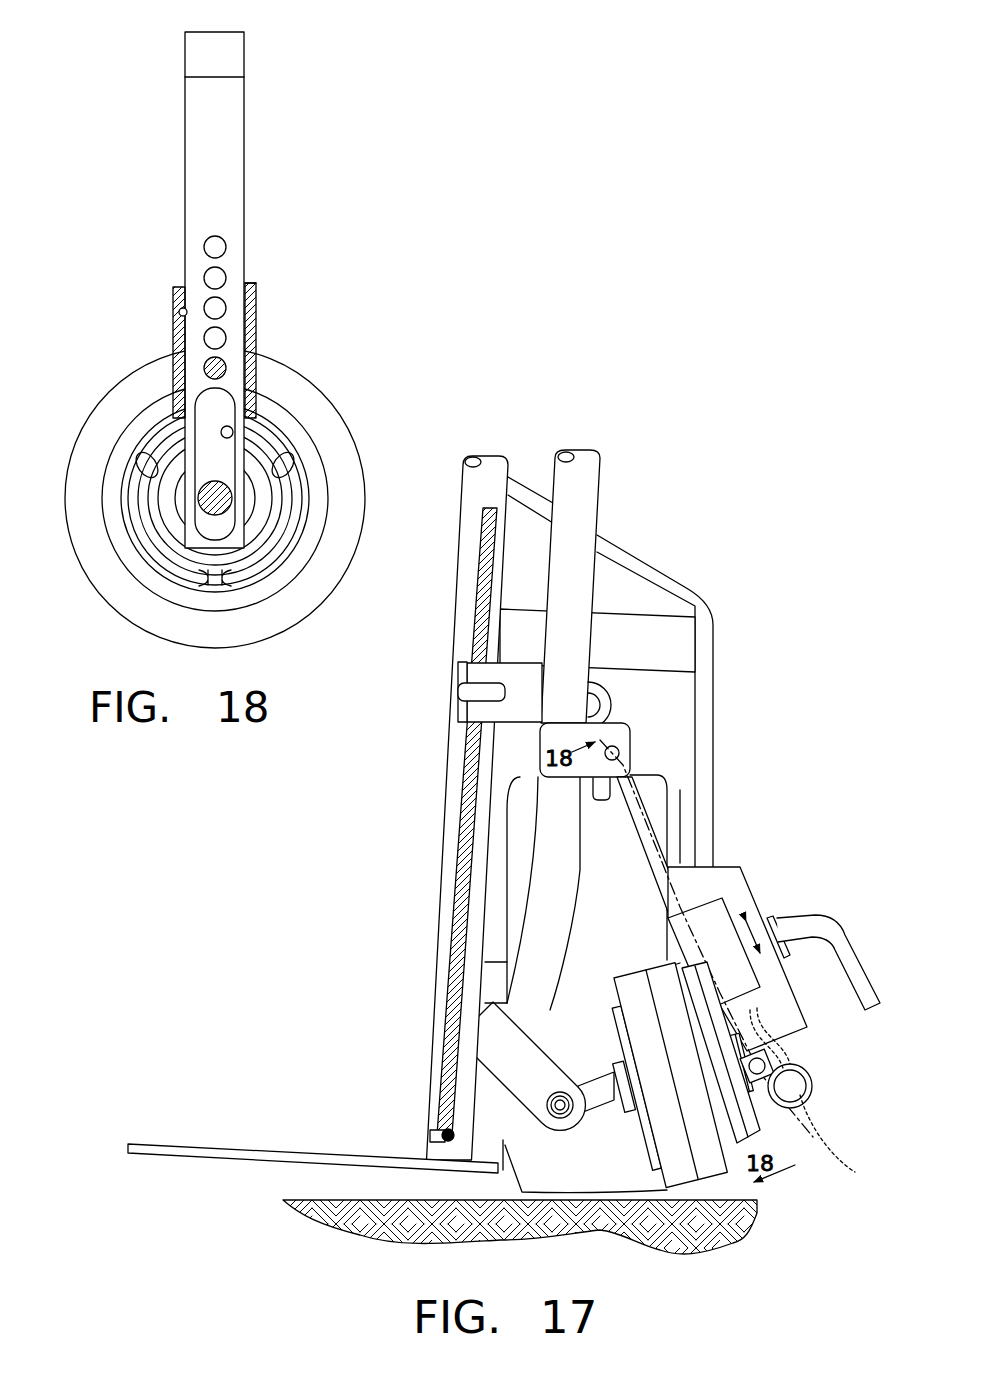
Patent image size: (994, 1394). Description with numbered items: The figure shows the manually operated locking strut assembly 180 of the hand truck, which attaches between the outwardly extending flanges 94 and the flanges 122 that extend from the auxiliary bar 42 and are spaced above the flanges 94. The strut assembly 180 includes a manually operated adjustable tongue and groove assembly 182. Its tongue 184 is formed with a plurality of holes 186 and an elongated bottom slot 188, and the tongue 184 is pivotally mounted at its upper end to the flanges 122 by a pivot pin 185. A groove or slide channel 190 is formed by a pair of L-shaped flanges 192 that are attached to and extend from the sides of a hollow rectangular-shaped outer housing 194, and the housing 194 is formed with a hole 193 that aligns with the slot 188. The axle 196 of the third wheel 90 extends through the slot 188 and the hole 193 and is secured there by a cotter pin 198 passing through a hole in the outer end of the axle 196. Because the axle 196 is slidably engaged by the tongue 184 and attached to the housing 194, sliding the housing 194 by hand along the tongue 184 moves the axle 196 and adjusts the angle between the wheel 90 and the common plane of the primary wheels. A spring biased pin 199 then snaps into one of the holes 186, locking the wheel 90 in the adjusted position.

In FIG. 17, the auxiliary bar 42 is at (587, 505).
In FIG. 18, the third wheel 90 is at (108, 604).
In FIG. 17, the third wheel 90 is at (720, 1170).
In FIG. 17, the outwardly extending flanges 94 is at (515, 1060).
In FIG. 17, the flanges 122 is at (620, 733).
In FIG. 17, the locking strut assembly 180 is at (747, 938).
In FIG. 18, the tongue and groove assembly 182 is at (258, 277).
In FIG. 17, the tongue and groove assembly 182 is at (667, 909).
In FIG. 18, the tongue 184 is at (214, 122).
In FIG. 17, the tongue 184 is at (650, 840).
In FIG. 17, the pivot pin 185 is at (620, 752).
In FIG. 18, the holes 186 is at (221, 244).
In FIG. 18, the elongated bottom slot 188 is at (233, 440).
In FIG. 18, the slide channel 190 is at (173, 313).
In FIG. 18, the L-shaped flanges 192 is at (252, 318).
In FIG. 17, the L-shaped flanges 192 is at (723, 895).
In FIG. 17, the hole 193 is at (851, 1140).
In FIG. 17, the outer housing 194 is at (792, 1034).
In FIG. 18, the axle 196 is at (220, 502).
In FIG. 17, the axle 196 is at (607, 1097).
In FIG. 17, the cotter pin 198 is at (812, 1095).
In FIG. 18, the spring biased pin 199 is at (219, 368).
In FIG. 17, the spring biased pin 199 is at (850, 952).